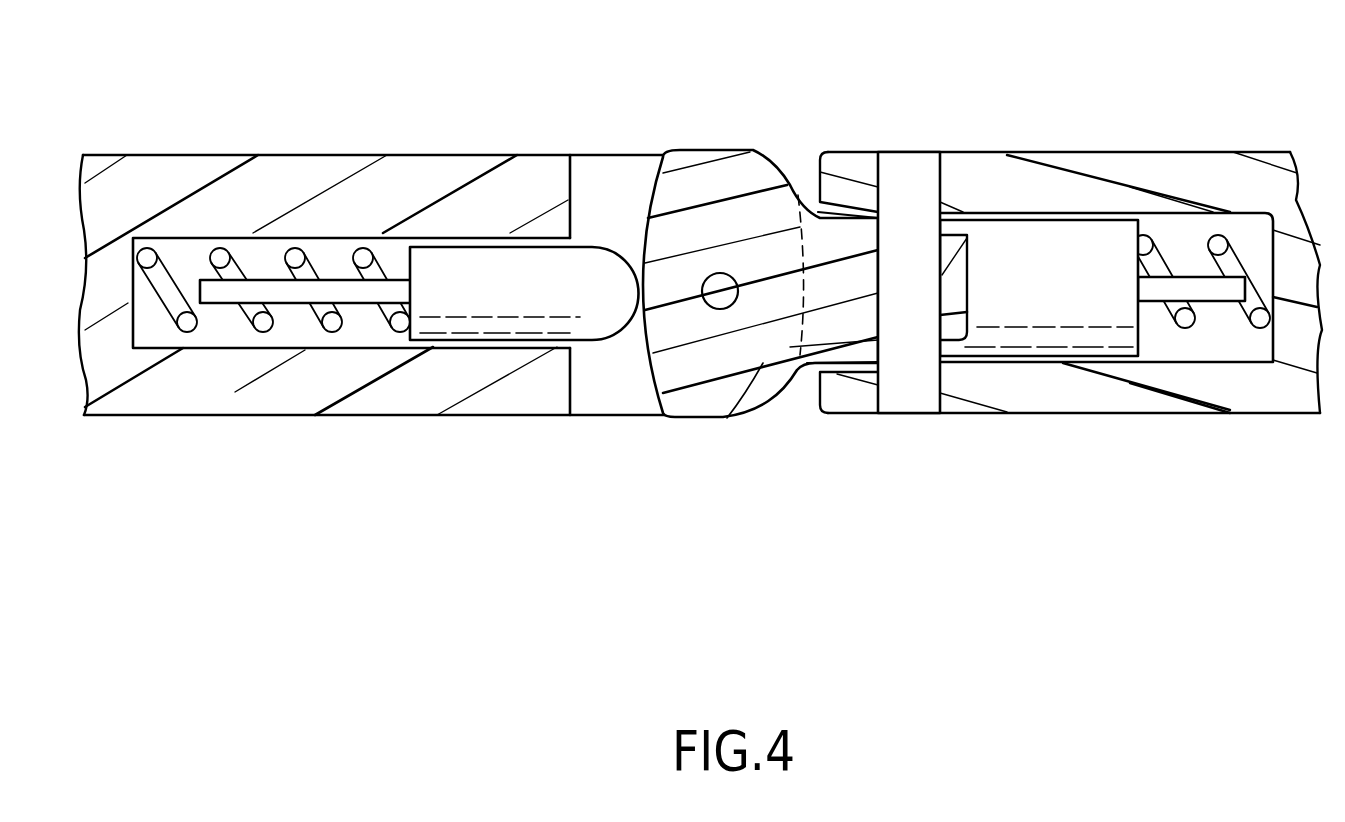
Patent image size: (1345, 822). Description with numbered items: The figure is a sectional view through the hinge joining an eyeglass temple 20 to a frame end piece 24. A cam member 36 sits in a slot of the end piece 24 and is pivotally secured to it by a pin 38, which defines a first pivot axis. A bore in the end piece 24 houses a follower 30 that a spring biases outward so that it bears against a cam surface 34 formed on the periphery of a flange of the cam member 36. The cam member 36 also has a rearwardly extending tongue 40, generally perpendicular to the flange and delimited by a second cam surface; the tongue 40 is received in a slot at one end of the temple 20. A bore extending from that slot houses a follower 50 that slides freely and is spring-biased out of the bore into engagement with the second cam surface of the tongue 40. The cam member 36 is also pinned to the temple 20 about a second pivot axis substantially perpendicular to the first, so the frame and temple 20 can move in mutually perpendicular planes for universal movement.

The temple 20 is at (216, 396).
The end piece 24 is at (1173, 170).
The follower 30 is at (999, 337).
The cam surface 34 is at (968, 238).
The cam member 36 is at (771, 428).
The pin 38 is at (900, 168).
The tongue 40 is at (730, 416).
The follower 50 is at (362, 300).